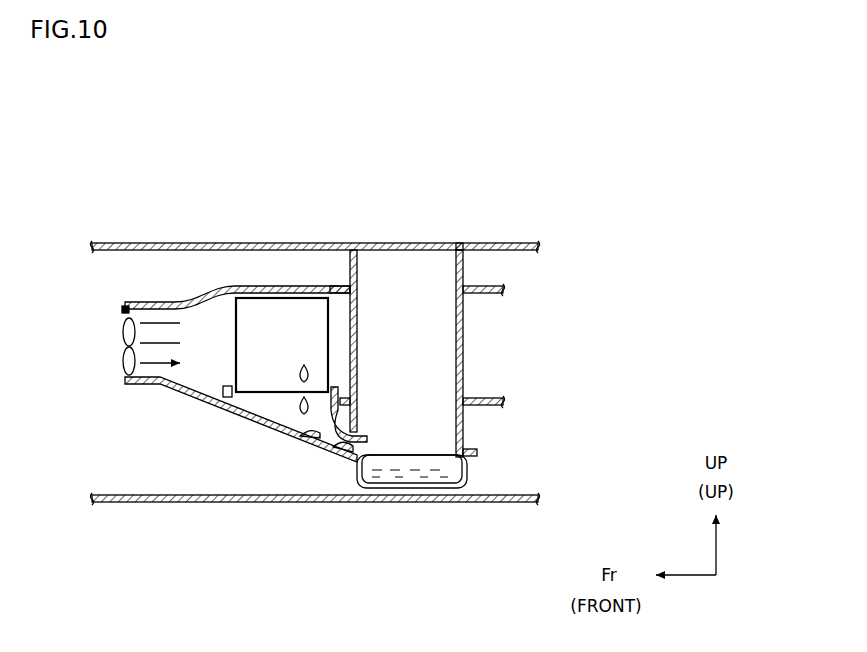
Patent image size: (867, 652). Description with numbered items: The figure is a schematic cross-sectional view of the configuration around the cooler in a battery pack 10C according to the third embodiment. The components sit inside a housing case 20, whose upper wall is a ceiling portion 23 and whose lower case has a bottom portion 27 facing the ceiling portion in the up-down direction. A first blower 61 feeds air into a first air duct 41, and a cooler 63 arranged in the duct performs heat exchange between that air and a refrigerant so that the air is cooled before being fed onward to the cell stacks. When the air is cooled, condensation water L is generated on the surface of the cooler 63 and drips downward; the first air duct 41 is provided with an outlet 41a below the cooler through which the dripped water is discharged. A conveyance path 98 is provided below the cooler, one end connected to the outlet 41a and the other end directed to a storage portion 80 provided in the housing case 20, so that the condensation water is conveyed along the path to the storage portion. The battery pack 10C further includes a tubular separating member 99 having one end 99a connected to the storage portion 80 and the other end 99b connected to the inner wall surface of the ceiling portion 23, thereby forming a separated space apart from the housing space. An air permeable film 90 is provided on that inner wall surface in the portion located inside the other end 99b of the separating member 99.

The battery pack 10C is at (572, 170).
The housing case 20 is at (96, 530).
The ceiling portion 23 is at (182, 242).
The bottom portion 27 is at (164, 503).
The first air duct 41 is at (325, 287).
The outlet 41a is at (238, 400).
The first blower 61 is at (131, 311).
The cooler 63 is at (275, 321).
The condensation water L is at (298, 378).
The storage portion 80 is at (412, 490).
The air permeable film 90 is at (404, 243).
The conveyance path 98 is at (313, 446).
The separating member 99 is at (466, 356).
The one end of separating member 99a is at (472, 462).
The other end of separating member 99b is at (459, 245).